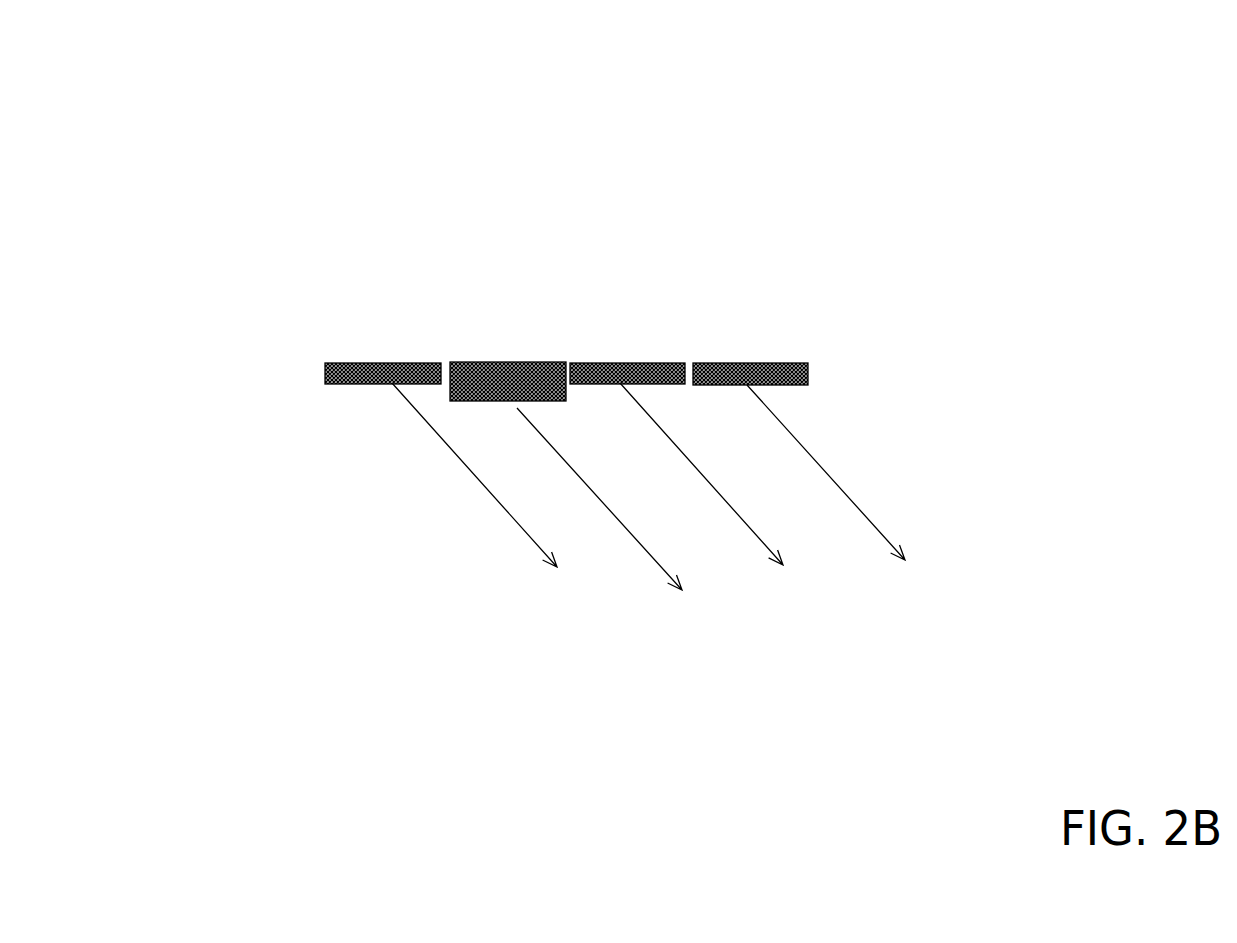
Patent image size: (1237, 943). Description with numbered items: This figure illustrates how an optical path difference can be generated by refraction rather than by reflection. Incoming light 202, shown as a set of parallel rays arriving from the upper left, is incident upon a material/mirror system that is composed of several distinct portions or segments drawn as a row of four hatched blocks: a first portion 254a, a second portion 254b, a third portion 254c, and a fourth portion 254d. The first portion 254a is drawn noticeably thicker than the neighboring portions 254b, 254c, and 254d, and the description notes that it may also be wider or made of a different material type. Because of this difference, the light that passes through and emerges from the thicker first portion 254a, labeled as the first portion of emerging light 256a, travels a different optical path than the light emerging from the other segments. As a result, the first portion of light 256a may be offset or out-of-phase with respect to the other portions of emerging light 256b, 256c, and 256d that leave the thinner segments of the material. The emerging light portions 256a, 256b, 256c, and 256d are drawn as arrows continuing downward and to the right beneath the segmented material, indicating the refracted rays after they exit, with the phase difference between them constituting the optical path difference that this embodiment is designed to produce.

The incoming light 202 is at (590, 321).
The first portion of material/mirror system 254a is at (473, 385).
The second portion of material/mirror system 254b is at (355, 380).
The third portion of material/mirror system 254c is at (605, 381).
The fourth portion of material/mirror system 254d is at (793, 360).
The first portion of emerging light 256a is at (653, 548).
The second portion of emerging light 256b is at (533, 548).
The third portion of emerging light 256c is at (740, 515).
The fourth portion of emerging light 256d is at (858, 505).